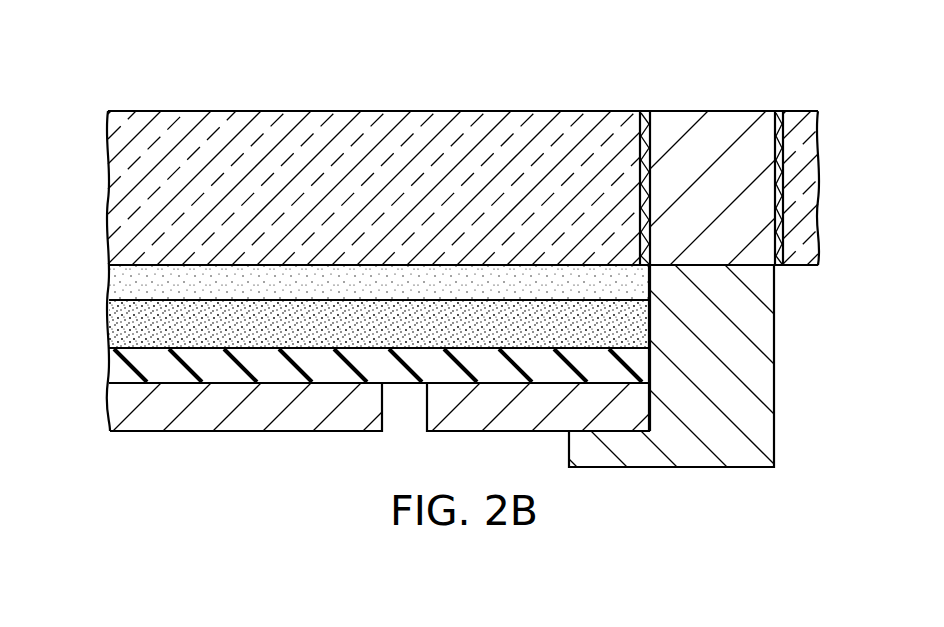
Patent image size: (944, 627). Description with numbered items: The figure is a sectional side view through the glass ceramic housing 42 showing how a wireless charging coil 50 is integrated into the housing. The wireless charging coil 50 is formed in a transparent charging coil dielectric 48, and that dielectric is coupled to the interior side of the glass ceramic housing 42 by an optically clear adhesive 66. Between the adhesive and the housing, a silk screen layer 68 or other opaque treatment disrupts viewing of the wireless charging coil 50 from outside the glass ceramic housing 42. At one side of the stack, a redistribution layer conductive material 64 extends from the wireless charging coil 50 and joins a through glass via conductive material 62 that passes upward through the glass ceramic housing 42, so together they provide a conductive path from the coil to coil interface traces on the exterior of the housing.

The glass ceramic housing 42 is at (108, 173).
The through glass via conductive material 62 is at (728, 119).
The redistribution layer conductive material 64 is at (763, 383).
The silk screen layer 68 is at (110, 282).
The optically clear adhesive 66 is at (110, 325).
The transparent charging coil dielectric 48 is at (110, 365).
The wireless charging coil 50 is at (110, 402).